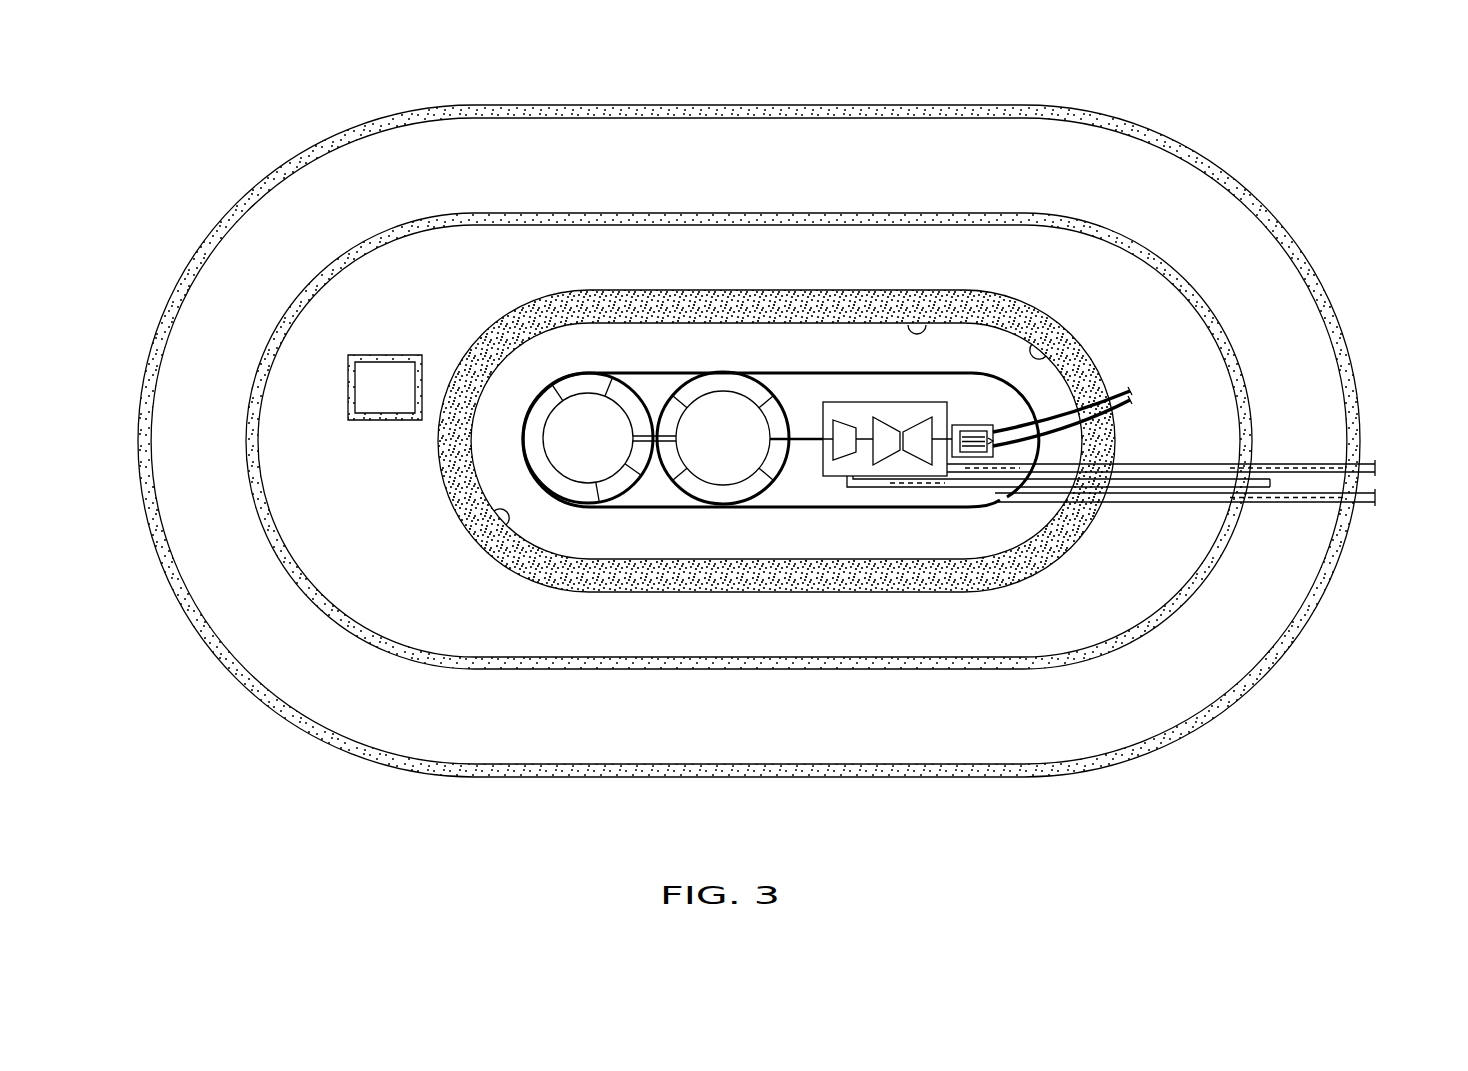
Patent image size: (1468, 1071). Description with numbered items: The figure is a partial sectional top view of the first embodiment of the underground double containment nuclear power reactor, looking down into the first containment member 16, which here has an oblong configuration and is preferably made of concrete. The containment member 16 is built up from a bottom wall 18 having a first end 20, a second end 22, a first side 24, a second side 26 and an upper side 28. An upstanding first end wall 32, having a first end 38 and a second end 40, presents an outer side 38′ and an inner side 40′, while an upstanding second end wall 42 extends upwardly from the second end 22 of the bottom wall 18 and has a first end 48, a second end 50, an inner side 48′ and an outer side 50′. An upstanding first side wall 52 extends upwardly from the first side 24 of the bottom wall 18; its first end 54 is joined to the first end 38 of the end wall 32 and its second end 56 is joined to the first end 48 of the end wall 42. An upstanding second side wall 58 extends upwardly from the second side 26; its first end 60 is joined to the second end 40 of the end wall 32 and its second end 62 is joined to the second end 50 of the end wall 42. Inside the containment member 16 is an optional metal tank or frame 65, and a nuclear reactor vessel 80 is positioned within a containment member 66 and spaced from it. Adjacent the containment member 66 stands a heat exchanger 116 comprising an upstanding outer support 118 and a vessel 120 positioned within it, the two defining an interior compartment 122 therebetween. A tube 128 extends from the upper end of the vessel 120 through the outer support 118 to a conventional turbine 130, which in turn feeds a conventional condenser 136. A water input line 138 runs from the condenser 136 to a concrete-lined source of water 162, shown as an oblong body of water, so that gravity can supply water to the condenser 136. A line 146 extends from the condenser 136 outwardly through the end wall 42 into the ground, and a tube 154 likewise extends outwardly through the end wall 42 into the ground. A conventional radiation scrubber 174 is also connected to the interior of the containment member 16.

The first containment member 16 is at (648, 287).
The bottom wall 18 is at (736, 548).
The first end 20 is at (463, 485).
The second end 22 is at (1083, 380).
The first side 24 is at (768, 592).
The second side 26 is at (847, 432).
The upper side 28 is at (808, 504).
The first end wall 32 is at (443, 475).
The first end 38 is at (543, 572).
The outer side 38′ is at (453, 503).
The second end 40 is at (470, 350).
The inner side 40′ is at (545, 570).
The second end wall 42 is at (1083, 353).
The first end 48 is at (1017, 490).
The inner side 48′ is at (1050, 335).
The second end 50 is at (1065, 335).
The outer side 50′ is at (1100, 357).
The first side wall 52 is at (615, 580).
The first end 54 is at (565, 590).
The second end 56 is at (977, 503).
The second side wall 58 is at (835, 303).
The first end 60 is at (547, 303).
The second end 62 is at (1047, 352).
The tank 65 is at (888, 510).
The containment member 66 is at (527, 380).
The nuclear reactor vessel 80 is at (560, 383).
The heat exchanger 116 is at (767, 383).
The outer support 118 is at (677, 393).
The vessel 120 is at (712, 490).
The interior compartment 122 is at (693, 490).
The tube 128 is at (808, 440).
The turbine 130 is at (925, 330).
The condenser 136 is at (977, 553).
The water input line 138 is at (1247, 490).
The line 146 is at (1373, 462).
The tube 154 is at (1367, 503).
The source of water 162 is at (1087, 152).
The radiation scrubber 174 is at (372, 368).